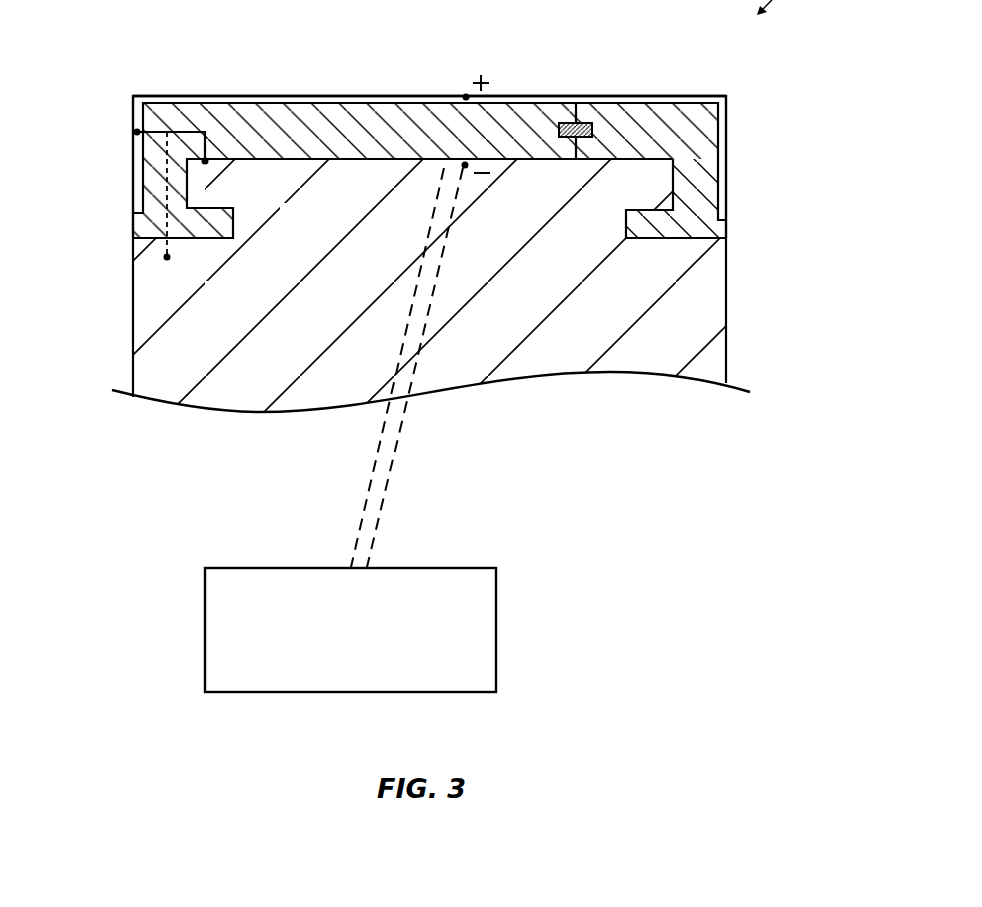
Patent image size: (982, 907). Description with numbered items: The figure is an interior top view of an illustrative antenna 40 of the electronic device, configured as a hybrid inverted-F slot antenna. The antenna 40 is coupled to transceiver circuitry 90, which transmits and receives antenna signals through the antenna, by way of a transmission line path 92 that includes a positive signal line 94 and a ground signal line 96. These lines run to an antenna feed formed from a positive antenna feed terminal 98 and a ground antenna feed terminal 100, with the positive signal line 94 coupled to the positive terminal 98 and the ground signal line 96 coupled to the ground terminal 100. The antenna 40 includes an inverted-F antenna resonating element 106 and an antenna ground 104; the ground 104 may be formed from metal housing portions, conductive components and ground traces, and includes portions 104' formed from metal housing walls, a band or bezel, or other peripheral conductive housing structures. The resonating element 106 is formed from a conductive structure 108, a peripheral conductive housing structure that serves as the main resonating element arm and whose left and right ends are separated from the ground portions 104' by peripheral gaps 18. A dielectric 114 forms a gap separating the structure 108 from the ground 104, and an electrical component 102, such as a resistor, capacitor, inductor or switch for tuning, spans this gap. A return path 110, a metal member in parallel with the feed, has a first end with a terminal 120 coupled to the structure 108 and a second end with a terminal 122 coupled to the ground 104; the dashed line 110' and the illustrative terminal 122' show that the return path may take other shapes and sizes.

The peripheral gaps 18 is at (116, 230).
The antenna 40 is at (740, 97).
The transceiver circuitry 90 is at (497, 624).
The transmission line path 92 is at (408, 458).
The positive signal line 94 is at (376, 465).
The ground signal line 96 is at (388, 486).
The positive antenna feed terminal 98 is at (466, 97).
The ground antenna feed terminal 100 is at (465, 168).
The component 102 is at (587, 123).
The antenna ground 104 is at (430, 312).
The ground portions 104' is at (433, 312).
The inverted-F antenna resonating element 106 is at (118, 97).
The conductive structure 108 is at (292, 103).
The return path 110 is at (183, 126).
The alternative return path 110' is at (244, 210).
The dielectric 114 is at (378, 115).
The terminal 120 is at (137, 132).
The terminal 122 is at (241, 180).
The illustrative terminal 122' is at (205, 216).